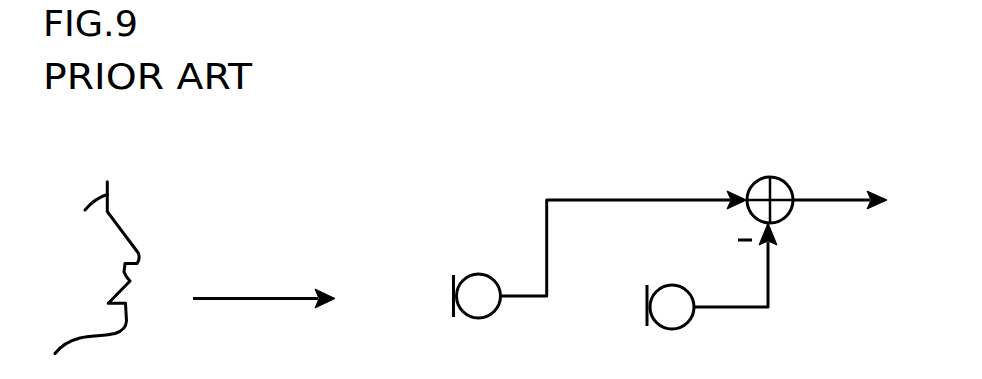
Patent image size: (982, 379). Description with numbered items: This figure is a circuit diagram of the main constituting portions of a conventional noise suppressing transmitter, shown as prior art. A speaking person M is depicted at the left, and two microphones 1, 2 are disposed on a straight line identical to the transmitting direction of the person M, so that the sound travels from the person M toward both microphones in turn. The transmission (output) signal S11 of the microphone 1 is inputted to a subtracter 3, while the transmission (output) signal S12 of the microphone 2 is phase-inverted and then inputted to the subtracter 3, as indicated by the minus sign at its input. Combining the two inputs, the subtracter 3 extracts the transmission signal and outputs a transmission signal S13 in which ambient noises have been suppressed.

The person M is at (107, 194).
The microphone 1 is at (487, 317).
The microphone 2 is at (688, 327).
The subtracter 3 is at (780, 186).
The transmission signal S11 is at (624, 243).
The transmission signal S12 is at (757, 265).
The transmission signal S13 is at (848, 215).